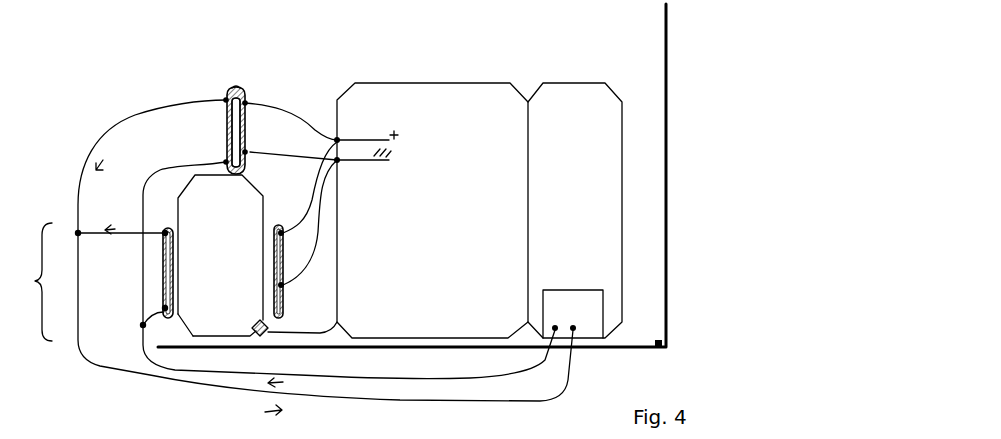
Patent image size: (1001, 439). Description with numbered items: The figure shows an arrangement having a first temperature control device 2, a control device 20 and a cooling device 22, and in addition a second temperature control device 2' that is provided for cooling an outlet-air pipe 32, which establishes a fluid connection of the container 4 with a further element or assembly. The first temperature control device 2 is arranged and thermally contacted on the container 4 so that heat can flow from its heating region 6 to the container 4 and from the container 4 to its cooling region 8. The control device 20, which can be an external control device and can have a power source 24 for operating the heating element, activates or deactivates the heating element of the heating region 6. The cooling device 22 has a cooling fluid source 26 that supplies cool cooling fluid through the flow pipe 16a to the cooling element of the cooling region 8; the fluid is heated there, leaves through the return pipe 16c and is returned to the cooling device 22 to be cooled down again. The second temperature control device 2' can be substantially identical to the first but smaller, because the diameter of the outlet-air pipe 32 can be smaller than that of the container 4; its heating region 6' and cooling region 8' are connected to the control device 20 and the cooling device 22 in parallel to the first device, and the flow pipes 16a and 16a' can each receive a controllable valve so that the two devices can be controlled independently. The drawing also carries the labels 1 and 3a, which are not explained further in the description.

The electrochemical cell 1 is at (214, 255).
The first temperature control device 2 is at (31, 282).
The second temperature control device 2' is at (205, 181).
The connection point 3a is at (250, 324).
The container 4 is at (229, 275).
The heating region 6 is at (287, 271).
The heating region of the second temperature control device 6' is at (252, 132).
The cooling region 8 is at (183, 273).
The cooling region of the second temperature control device 8' is at (216, 130).
The flow pipe 16a is at (180, 312).
The flow pipe of the second temperature control device 16a' is at (181, 211).
The return pipe 16c is at (170, 232).
The control device 20 is at (432, 123).
The cooling device 22 is at (562, 123).
The power source 24 is at (409, 154).
The cooling fluid source 26 is at (571, 298).
The outlet-air pipe 32 is at (233, 88).